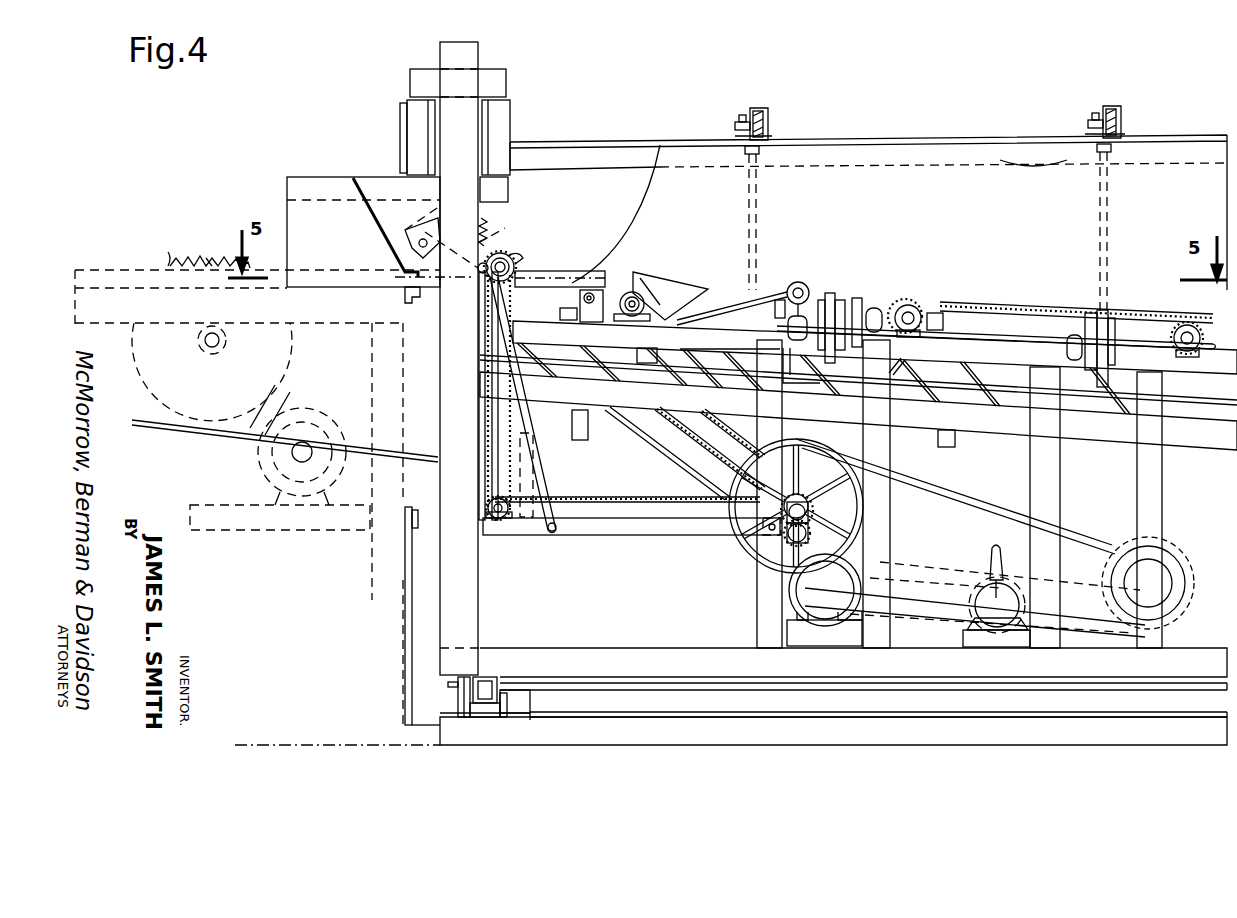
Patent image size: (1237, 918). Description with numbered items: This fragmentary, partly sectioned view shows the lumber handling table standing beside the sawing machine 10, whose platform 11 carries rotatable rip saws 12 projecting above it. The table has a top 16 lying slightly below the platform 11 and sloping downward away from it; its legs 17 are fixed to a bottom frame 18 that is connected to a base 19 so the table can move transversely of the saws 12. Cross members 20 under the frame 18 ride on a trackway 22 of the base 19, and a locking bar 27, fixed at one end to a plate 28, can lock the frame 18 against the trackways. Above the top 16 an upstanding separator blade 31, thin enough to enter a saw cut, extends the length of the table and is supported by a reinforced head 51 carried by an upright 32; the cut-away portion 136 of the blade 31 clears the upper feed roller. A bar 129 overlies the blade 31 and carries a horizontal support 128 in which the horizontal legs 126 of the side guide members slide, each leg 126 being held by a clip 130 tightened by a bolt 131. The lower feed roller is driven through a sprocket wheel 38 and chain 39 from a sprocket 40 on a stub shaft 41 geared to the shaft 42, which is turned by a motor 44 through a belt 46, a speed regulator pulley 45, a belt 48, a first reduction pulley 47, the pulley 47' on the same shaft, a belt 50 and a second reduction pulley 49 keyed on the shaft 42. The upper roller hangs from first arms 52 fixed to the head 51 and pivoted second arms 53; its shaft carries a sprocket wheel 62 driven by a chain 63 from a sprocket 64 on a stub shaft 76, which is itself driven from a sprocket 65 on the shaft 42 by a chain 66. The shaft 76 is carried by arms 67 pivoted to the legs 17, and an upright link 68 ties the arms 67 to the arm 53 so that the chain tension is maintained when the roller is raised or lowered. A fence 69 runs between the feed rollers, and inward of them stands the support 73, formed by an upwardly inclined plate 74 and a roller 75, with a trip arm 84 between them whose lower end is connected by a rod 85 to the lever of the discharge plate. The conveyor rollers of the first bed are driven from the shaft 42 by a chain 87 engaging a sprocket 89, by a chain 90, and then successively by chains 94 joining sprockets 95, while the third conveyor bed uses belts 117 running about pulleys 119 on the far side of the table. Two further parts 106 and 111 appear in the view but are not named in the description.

The sawing machine 10 is at (168, 254).
The platform 11 is at (128, 282).
The rip saws 12 is at (206, 254).
The top 16 is at (1036, 308).
The legs 17 is at (1143, 510).
The bottom frame 18 is at (908, 674).
The base 19 is at (452, 746).
The cross members 20 is at (498, 678).
The trackway 22 is at (510, 718).
The locking bar 27 is at (578, 687).
The plate 28 is at (460, 698).
The separator blade 31 is at (932, 180).
The upright 32 is at (470, 62).
The sprocket wheel 38 is at (492, 300).
The chain 39 is at (648, 440).
The sprocket 40 is at (793, 546).
The stub shaft 41 is at (790, 535).
The shaft 42 is at (812, 514).
The motor 44 is at (800, 603).
The speed regulator pulley 45 is at (990, 590).
The belt 46 is at (912, 578).
The first reduction pulley 47 is at (1150, 576).
The pulley 47' is at (1173, 591).
The belt 48 is at (1087, 636).
The second reduction pulley 49 is at (845, 482).
The belt 50 is at (955, 472).
The reinforced head 51 is at (510, 94).
The first arm 52 is at (503, 213).
The second arm 53 is at (486, 252).
The sprocket wheel 62 is at (512, 260).
The chain 63 is at (484, 380).
The sprocket 64 is at (507, 524).
The sprocket 65 is at (808, 503).
The chain 66 is at (575, 498).
The arms 67 is at (596, 536).
The upright link 68 is at (540, 461).
The fence 69 is at (550, 280).
The upstanding support 73 is at (785, 272).
The upwardly inclined plate 74 is at (732, 306).
The roller 75 is at (802, 283).
The stub shaft 76 is at (488, 517).
The trip arm 84 is at (670, 292).
The rod 85 is at (992, 394).
The chain 87 is at (707, 384).
The sprocket 89 is at (641, 296).
The chain 90 is at (896, 372).
The chains 94 is at (1000, 312).
The sprockets 95 is at (913, 307).
The block 106 is at (572, 308).
The gear 111 is at (906, 302).
The belts 117 is at (836, 294).
The pulley 119 is at (871, 306).
The horizontally disposed leg 126 is at (748, 116).
The horizontal support 128 is at (760, 148).
The bar 129 is at (862, 140).
The clips 130 is at (762, 110).
The bolts 131 is at (735, 128).
The cut-away portion 136 is at (648, 206).